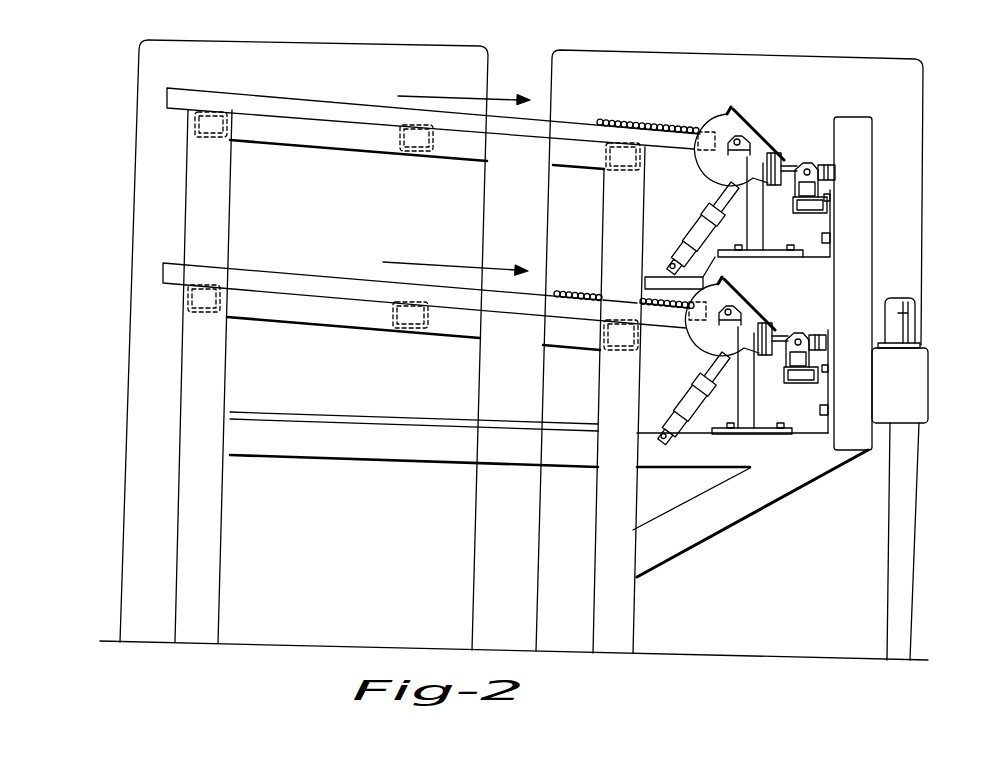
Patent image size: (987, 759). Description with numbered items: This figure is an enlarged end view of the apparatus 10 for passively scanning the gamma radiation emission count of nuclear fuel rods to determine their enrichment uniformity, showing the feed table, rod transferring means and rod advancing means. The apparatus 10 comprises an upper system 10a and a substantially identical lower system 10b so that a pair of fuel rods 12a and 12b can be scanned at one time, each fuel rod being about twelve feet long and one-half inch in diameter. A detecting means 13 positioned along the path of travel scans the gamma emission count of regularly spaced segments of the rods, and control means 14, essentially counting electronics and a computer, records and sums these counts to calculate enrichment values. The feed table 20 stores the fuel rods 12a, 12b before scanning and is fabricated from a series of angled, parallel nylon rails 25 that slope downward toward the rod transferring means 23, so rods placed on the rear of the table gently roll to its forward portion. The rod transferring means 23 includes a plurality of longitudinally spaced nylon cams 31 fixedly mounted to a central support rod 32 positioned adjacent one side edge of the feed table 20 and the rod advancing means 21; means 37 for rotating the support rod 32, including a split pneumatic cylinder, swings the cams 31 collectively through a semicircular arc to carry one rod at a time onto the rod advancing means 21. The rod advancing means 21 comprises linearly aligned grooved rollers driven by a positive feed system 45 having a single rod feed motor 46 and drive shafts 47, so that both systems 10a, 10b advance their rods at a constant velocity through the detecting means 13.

The apparatus 10 is at (112, 48).
The upper system 10a is at (139, 121).
The lower system 10b is at (139, 303).
The fuel rod 12a is at (631, 125).
The fuel rod 12b is at (580, 290).
The detecting means 13 is at (934, 194).
The control means 14 is at (113, 426).
The feed table 20 is at (257, 82).
The rod advancing means 21 is at (800, 155).
The rod transferring means 23 is at (768, 76).
The nylon rails 25 is at (334, 80).
The nylon cams 31 is at (708, 164).
The support rod 32 is at (743, 133).
The means for rotating the support rod 37 is at (684, 230).
The positive feed system 45 is at (932, 330).
The rod feed motor 46 is at (903, 318).
The drive shafts 47 is at (809, 168).